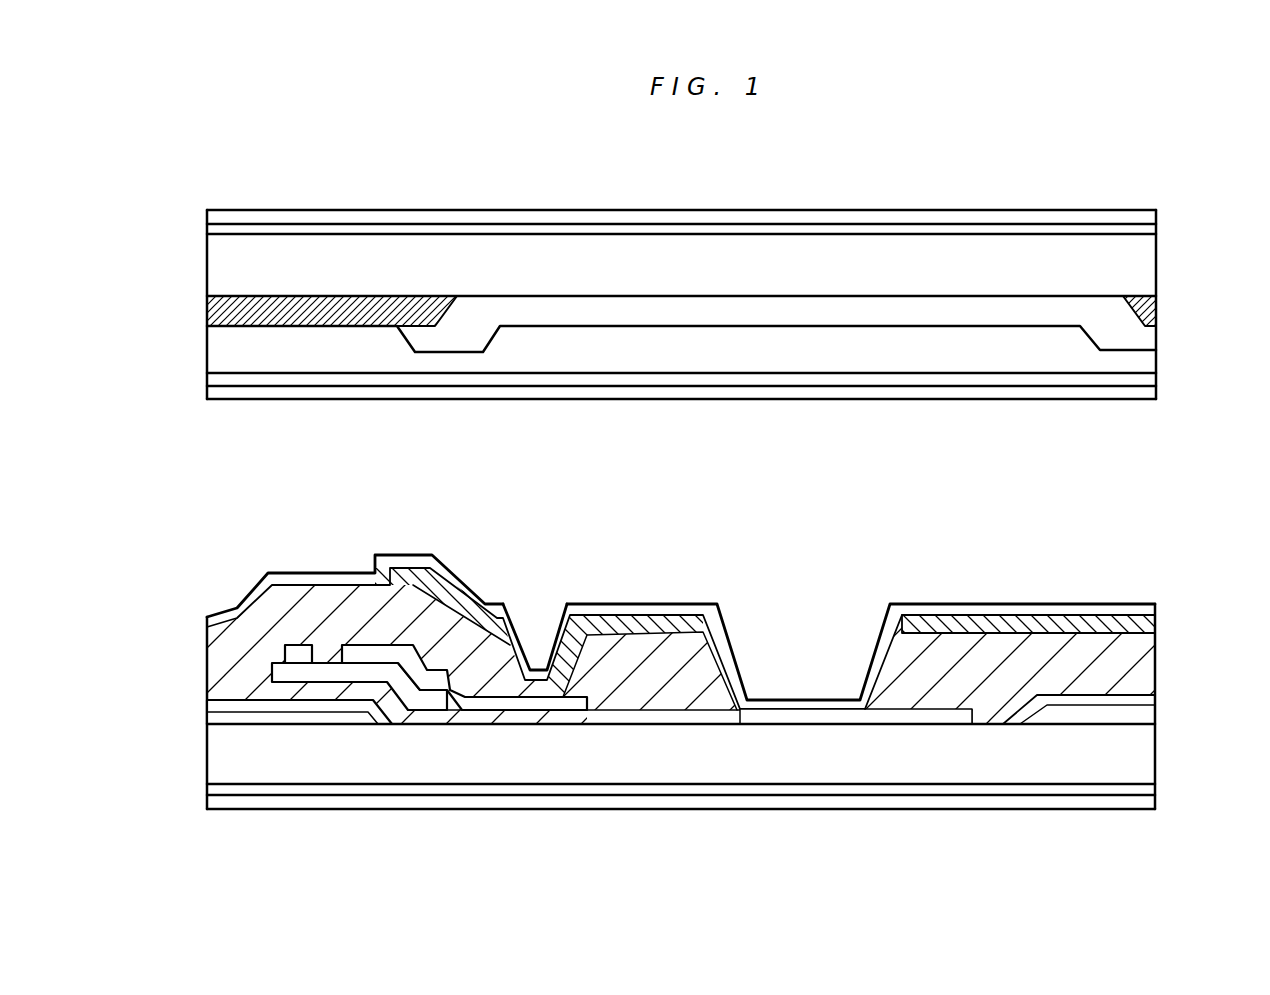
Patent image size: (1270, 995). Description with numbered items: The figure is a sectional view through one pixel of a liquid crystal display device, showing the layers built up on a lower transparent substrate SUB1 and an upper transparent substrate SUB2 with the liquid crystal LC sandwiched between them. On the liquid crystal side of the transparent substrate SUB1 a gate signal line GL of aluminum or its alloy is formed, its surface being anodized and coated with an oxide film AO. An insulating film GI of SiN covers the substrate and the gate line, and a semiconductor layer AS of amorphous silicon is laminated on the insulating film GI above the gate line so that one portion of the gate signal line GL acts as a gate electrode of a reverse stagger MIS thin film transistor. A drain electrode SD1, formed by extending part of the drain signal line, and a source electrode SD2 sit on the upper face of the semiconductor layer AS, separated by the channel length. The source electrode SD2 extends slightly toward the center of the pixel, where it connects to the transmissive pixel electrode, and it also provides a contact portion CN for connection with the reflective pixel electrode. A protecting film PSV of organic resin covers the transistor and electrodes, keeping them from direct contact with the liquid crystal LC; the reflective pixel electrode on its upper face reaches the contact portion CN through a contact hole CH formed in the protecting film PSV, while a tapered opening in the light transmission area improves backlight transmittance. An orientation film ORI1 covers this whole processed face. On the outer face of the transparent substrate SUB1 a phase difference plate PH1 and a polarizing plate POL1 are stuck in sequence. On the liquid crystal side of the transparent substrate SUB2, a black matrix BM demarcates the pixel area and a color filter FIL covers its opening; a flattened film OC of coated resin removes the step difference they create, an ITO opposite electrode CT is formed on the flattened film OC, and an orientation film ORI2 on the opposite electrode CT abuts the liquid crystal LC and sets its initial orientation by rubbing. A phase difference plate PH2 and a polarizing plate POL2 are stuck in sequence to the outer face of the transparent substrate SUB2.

The polarizing plate POL2 is at (1053, 212).
The phase difference plate PH2 is at (1150, 226).
The transparent substrate SUB2 is at (1152, 258).
The black matrix BM is at (1156, 301).
The color filter FIL is at (1135, 337).
The flattened film OC is at (1143, 363).
The opposite electrode CT is at (1148, 378).
The orientation film ORI2 is at (1111, 393).
The liquid crystal LC is at (1092, 525).
The drain electrode SD1 is at (292, 650).
The source electrode SD2 is at (378, 647).
The contact hole CH is at (540, 630).
The orientation film ORI1 is at (1137, 607).
The semiconductor layer AS is at (285, 673).
The insulating film GI is at (272, 690).
The oxide film AO is at (215, 700).
The gate signal line GL is at (224, 718).
The protecting film PSV is at (1128, 665).
The transparent substrate SUB1 is at (1140, 750).
The phase difference plate PH1 is at (1155, 792).
The polarizing plate POL1 is at (985, 797).
The contact portion CN is at (505, 705).